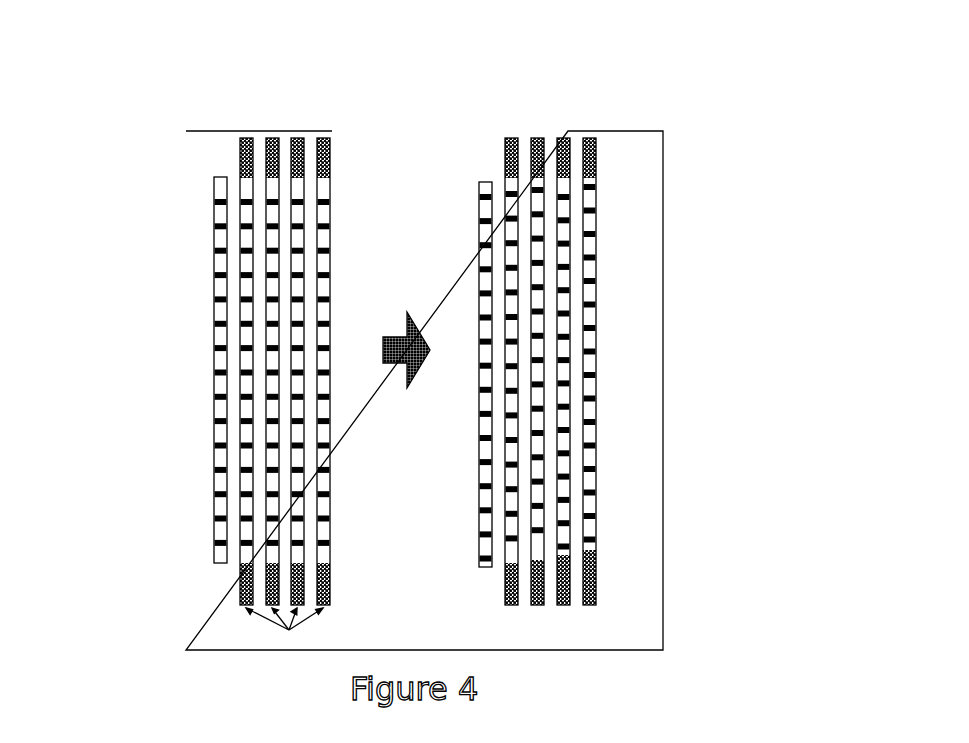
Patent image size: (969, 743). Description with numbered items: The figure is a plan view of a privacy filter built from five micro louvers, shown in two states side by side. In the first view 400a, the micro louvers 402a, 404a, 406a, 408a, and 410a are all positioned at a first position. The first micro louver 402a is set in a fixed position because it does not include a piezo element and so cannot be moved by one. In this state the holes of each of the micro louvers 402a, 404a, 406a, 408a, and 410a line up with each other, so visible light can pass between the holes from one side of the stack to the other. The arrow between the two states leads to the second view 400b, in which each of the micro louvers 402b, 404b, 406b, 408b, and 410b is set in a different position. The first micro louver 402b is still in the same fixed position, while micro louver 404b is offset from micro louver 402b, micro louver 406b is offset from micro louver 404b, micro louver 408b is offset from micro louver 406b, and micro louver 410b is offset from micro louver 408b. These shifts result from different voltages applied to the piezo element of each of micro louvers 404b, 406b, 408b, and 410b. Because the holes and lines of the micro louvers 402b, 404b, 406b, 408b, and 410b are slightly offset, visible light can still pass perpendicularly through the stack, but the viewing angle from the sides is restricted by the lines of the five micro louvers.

The first view 400a is at (165, 353).
The second view 400b is at (678, 353).
The first micro louver 402a is at (221, 177).
The micro louver 404a is at (253, 138).
The micro louver 406a is at (279, 138).
The micro louver 408a is at (305, 138).
The micro louver 410a is at (330, 138).
The first micro louver 402b is at (486, 182).
The micro louver 404b is at (519, 138).
The micro louver 406b is at (545, 138).
The micro louver 408b is at (571, 138).
The micro louver 410b is at (596, 138).